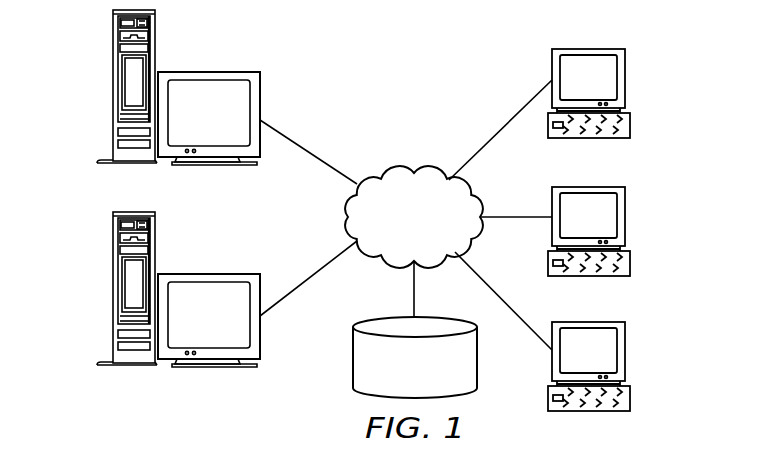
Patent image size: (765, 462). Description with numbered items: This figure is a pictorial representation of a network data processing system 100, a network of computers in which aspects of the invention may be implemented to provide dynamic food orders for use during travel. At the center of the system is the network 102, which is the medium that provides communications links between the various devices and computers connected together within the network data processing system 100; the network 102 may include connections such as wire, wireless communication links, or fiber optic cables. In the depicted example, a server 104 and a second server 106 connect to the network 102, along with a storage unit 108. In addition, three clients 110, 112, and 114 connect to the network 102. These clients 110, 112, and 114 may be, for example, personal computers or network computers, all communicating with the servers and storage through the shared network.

The network data processing system 100 is at (468, 56).
The network 102 is at (388, 169).
The server 104 is at (113, 88).
The server 106 is at (113, 290).
The storage unit 108 is at (353, 368).
The client 110 is at (625, 78).
The client 112 is at (625, 217).
The client 114 is at (625, 350).